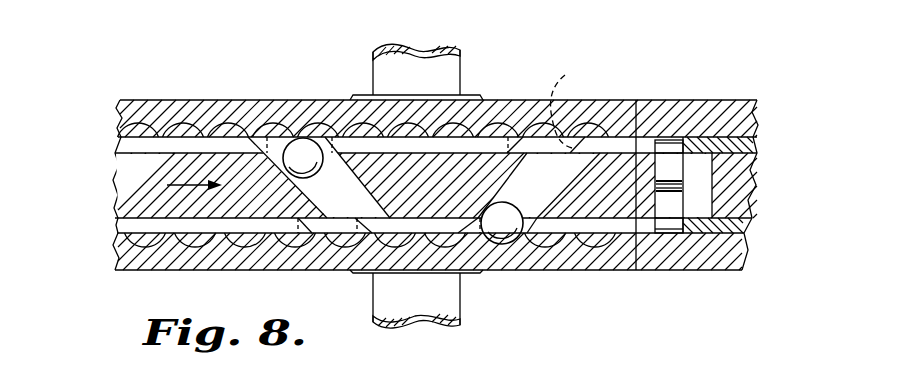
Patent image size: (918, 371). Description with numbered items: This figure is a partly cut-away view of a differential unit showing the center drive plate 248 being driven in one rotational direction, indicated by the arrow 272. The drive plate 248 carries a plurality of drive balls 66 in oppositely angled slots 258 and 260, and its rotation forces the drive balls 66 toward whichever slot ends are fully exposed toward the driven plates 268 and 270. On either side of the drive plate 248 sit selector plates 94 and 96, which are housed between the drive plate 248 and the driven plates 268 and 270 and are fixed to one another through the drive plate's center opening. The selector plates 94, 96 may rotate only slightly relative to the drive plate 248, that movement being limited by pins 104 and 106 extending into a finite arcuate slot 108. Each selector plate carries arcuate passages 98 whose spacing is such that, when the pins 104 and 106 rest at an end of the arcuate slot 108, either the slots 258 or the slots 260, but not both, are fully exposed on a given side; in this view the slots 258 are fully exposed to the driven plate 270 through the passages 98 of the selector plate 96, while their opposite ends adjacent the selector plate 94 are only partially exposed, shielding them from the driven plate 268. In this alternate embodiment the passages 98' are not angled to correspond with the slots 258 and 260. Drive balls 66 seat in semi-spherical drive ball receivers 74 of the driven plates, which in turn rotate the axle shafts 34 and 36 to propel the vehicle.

The axle shaft 34 is at (440, 86).
The axle shaft 36 is at (433, 310).
The drive ball 66 is at (297, 147).
The drive ball receiver 74 is at (203, 238).
The selector plate 94 is at (727, 135).
The selector plate 96 is at (708, 198).
The arcuate passage 98 is at (319, 229).
The arcuate passage 98' is at (539, 140).
The pin 104 is at (676, 165).
The pin 106 is at (676, 203).
The arcuate slot 108 is at (747, 225).
The drive plate 248 is at (150, 205).
The angled slot 258 is at (152, 185).
The oppositely angled slot 260 is at (337, 160).
The driven plate 268 is at (617, 108).
The driven plate 270 is at (540, 260).
The arrow 272 is at (120, 191).